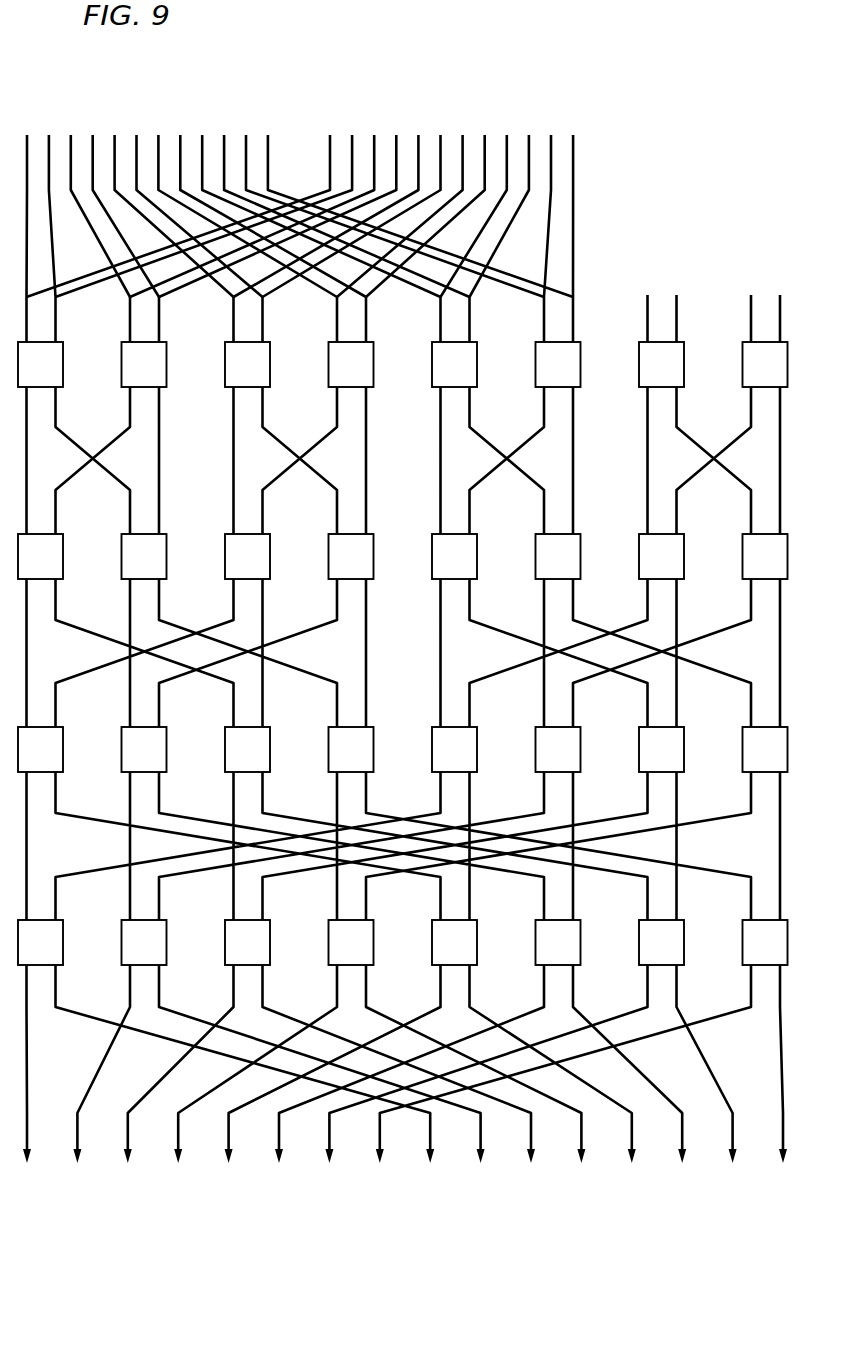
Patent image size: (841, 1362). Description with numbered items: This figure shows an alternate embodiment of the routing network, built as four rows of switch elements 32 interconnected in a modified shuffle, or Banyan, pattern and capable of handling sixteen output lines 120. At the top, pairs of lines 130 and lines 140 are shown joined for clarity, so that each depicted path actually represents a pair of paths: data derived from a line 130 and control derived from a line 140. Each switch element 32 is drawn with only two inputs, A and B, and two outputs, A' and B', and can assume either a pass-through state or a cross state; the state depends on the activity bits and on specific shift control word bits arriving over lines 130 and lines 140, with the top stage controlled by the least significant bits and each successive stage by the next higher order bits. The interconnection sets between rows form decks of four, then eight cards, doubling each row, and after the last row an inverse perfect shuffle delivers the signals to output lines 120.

The switch element 32 is at (742, 939).
The lines 130 is at (284, 137).
The lines 140 is at (588, 137).
The output lines 120 is at (797, 1167).